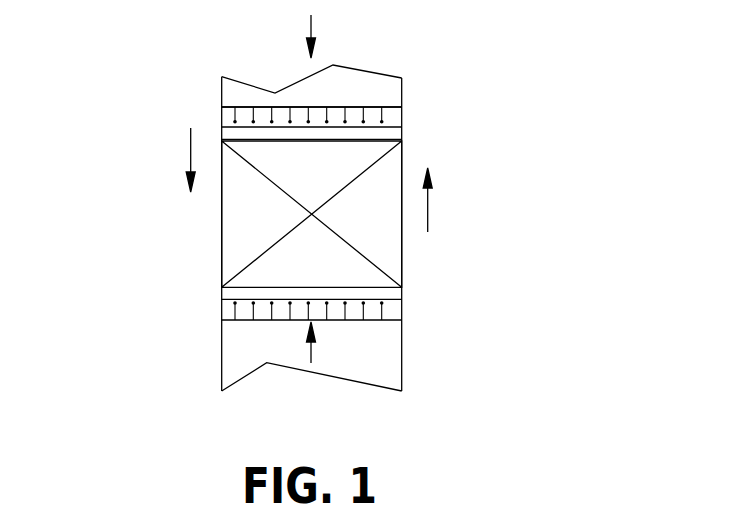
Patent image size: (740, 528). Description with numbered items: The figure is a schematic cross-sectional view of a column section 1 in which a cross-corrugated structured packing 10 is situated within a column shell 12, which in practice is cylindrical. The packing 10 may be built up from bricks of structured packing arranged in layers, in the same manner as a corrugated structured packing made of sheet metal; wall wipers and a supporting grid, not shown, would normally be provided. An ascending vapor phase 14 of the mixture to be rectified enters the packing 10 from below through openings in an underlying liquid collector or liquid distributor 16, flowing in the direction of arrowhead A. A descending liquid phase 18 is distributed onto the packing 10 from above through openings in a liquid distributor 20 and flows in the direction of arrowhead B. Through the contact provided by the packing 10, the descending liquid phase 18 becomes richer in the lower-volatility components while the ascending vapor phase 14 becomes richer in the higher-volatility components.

The column section 1 is at (359, 199).
The cross-corrugated structured packing 10 is at (237, 225).
The column shell 12 is at (402, 85).
The ascending vapor phase 14 is at (311, 358).
The liquid collector or liquid distributor 16 is at (402, 305).
The descending liquid phase 18 is at (311, 23).
The liquid distributor 20 is at (402, 113).